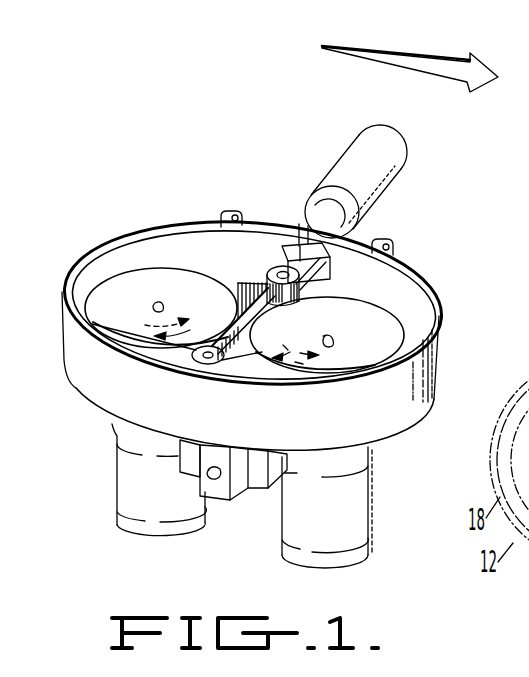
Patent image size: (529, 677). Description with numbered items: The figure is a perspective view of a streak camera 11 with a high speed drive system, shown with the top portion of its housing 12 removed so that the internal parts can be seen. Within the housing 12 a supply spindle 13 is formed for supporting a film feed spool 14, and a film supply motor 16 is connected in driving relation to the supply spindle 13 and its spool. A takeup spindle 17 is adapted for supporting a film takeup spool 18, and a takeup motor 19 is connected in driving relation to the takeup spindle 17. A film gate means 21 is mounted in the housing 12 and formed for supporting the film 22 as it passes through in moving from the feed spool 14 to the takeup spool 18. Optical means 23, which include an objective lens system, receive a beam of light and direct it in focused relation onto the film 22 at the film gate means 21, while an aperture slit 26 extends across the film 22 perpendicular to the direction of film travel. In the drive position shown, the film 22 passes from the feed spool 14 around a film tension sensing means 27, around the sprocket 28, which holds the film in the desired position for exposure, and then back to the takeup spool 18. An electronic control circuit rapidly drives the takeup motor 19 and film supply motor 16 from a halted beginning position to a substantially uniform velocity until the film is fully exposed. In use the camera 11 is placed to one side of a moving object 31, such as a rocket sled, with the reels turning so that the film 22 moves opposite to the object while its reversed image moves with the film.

The streak camera 11 is at (100, 212).
The housing 12 is at (437, 296).
The supply spindle 13 is at (326, 337).
The film feed spool 14 is at (377, 354).
The film supply motor 16 is at (367, 510).
The takeup spindle 17 is at (163, 304).
The film takeup spool 18 is at (136, 307).
The takeup motor 19 is at (118, 485).
The film gate means 21 is at (302, 232).
The film 22 is at (237, 364).
The optical means 23 is at (399, 197).
The slit 26 is at (330, 260).
The film tension sensing means 27 is at (200, 363).
The sprocket 28 is at (270, 273).
The moving object 31 is at (457, 80).